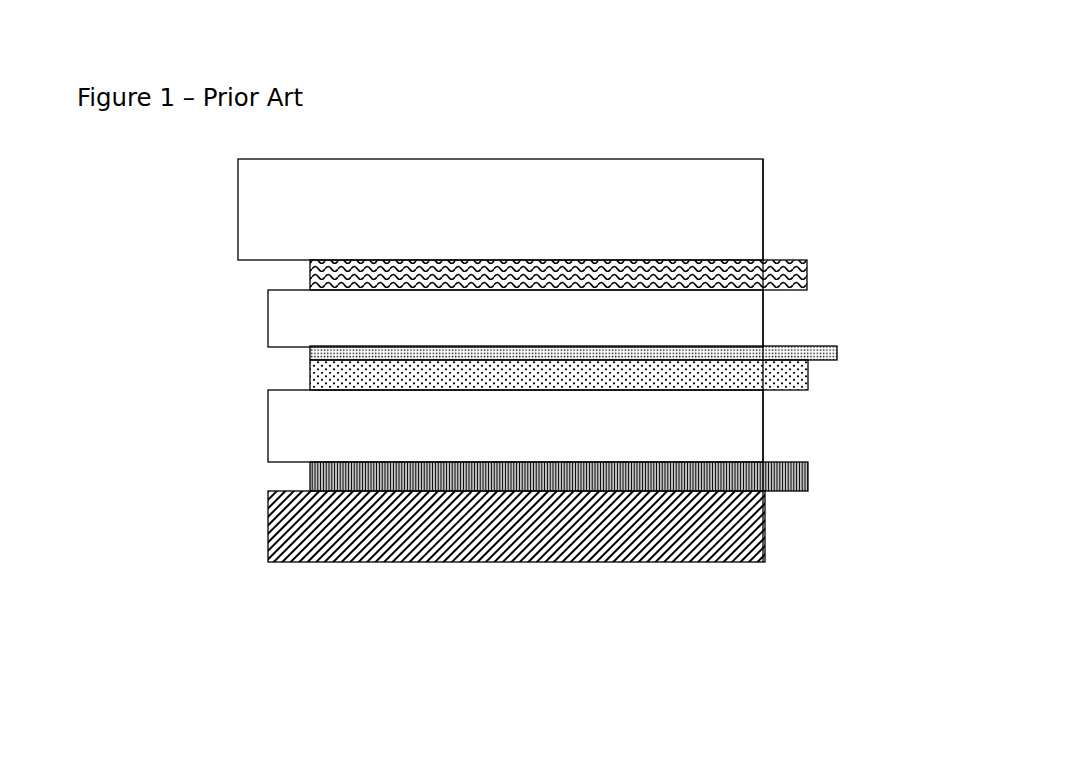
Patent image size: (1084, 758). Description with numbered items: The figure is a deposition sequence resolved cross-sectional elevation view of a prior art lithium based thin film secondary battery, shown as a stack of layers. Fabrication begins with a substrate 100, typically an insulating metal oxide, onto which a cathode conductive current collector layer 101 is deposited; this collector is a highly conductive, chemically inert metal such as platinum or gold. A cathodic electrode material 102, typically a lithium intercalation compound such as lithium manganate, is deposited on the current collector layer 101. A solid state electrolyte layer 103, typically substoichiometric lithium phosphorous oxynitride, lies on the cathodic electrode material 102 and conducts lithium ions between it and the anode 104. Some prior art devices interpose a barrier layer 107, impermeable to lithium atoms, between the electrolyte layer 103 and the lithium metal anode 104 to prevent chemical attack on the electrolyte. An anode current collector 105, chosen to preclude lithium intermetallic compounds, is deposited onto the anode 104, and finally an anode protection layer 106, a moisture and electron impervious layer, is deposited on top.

The substrate 100 is at (705, 577).
The cathode conductive current collector layer 101 is at (797, 493).
The cathodic electrode material 102 is at (767, 417).
The solid state electrolyte layer 103 is at (812, 372).
The anode 104 is at (767, 302).
The anode current collector 105 is at (810, 255).
The anode protection layer 106 is at (765, 185).
The barrier layer 107 is at (840, 345).